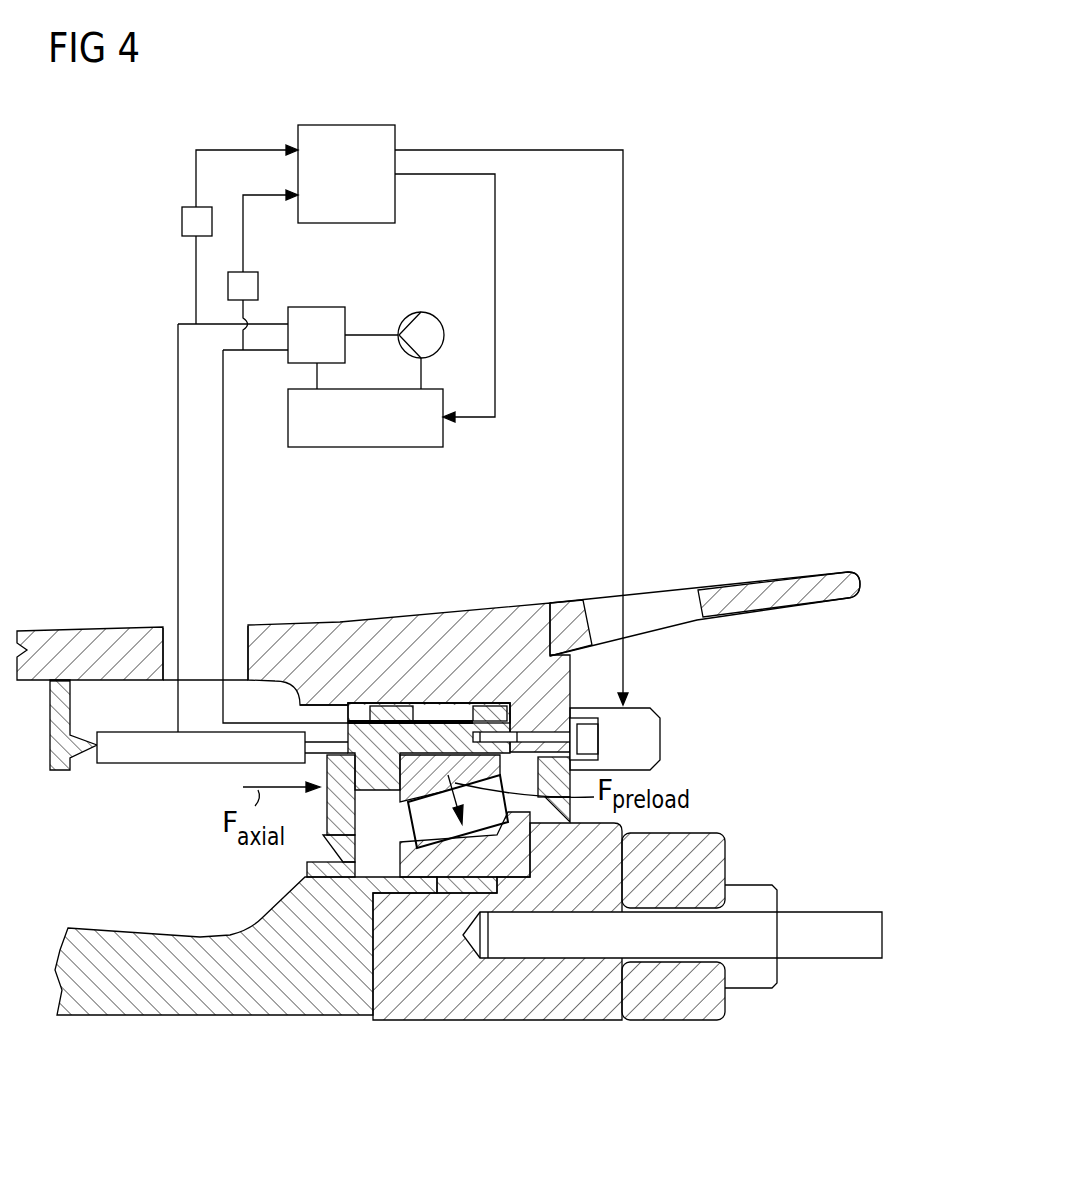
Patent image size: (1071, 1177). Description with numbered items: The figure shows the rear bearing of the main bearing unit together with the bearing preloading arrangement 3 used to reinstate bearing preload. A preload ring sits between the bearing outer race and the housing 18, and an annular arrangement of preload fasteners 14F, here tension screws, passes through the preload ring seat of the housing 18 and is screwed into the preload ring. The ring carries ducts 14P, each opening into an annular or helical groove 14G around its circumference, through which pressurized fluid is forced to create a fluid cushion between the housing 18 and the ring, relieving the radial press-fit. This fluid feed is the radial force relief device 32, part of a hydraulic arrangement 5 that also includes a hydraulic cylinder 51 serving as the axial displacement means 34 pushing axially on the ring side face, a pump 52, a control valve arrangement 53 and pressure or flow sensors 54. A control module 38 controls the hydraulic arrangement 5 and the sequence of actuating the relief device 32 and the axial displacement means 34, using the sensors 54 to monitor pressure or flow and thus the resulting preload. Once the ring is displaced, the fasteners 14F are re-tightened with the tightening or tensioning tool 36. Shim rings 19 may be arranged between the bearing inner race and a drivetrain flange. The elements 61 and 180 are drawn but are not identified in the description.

The bearing preloading arrangement 3 is at (702, 228).
The hydraulic arrangement 5 is at (118, 505).
The housing 18 is at (315, 633).
The shim rings 19 is at (565, 856).
The radial force relief device 32 is at (300, 700).
The axial displacement means 34 is at (180, 797).
The tightening/tensioning tool 36 is at (652, 742).
The control module 38 is at (345, 125).
The hydraulic cylinder 51 is at (125, 765).
The pump 52 is at (423, 312).
The control valve arrangement 53 is at (332, 307).
The pressure and/or flow sensors 54 is at (182, 222).
The sensor strip 61 is at (388, 690).
The cable 180 is at (190, 652).
The preload fasteners 14F is at (535, 732).
The annular groove 14G is at (410, 705).
The ducts 14P is at (370, 725).